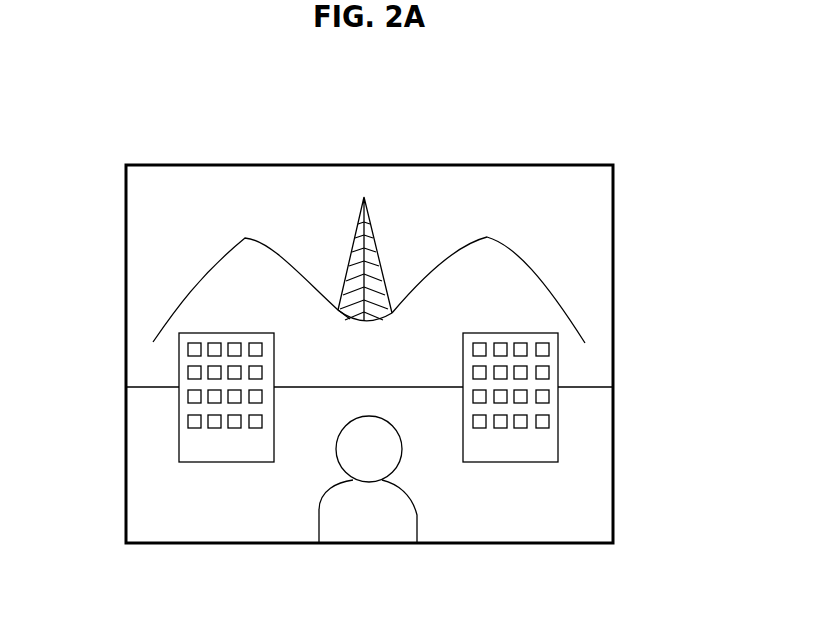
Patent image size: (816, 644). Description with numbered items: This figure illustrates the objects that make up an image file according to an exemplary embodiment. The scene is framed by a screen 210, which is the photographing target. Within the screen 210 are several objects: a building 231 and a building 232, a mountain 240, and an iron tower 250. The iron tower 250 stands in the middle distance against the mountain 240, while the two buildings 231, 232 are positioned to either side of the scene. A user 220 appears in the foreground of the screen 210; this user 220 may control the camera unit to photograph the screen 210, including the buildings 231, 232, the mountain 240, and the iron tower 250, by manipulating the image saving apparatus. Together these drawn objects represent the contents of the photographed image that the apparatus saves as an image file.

The screen 210 is at (537, 165).
The user 220 is at (417, 511).
The building 231 is at (558, 424).
The building 232 is at (179, 424).
The mountain 240 is at (557, 292).
The iron tower 250 is at (360, 228).